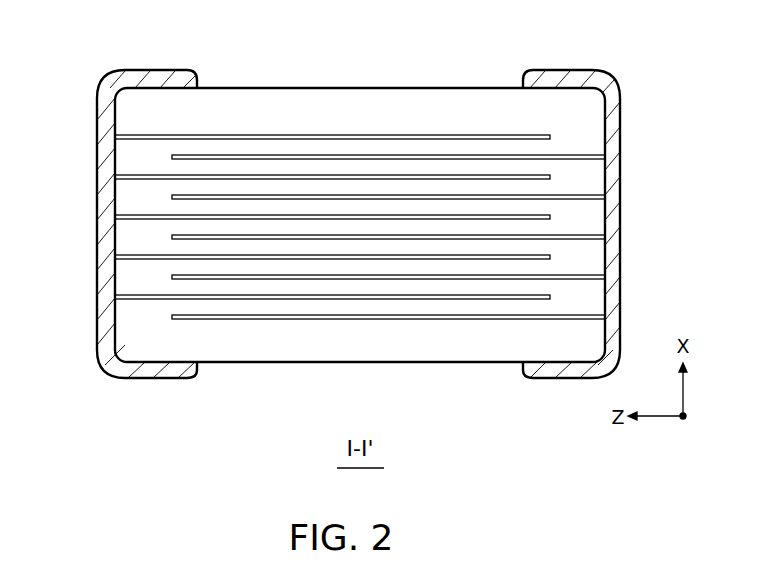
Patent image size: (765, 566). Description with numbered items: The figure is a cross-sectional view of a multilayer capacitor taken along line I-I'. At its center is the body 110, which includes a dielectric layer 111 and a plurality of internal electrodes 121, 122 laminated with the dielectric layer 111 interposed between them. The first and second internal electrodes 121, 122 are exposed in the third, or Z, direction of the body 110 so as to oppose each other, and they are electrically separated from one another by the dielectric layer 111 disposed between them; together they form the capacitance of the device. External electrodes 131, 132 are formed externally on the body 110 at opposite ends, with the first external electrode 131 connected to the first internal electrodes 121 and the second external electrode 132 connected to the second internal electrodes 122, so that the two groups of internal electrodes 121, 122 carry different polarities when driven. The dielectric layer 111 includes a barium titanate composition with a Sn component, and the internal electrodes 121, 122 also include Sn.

The body 110 is at (285, 88).
The dielectric layer 111 is at (178, 168).
The first internal electrode 121 is at (340, 135).
The second internal electrode 122 is at (400, 155).
The first external electrode 131 is at (150, 70).
The second external electrode 132 is at (570, 70).